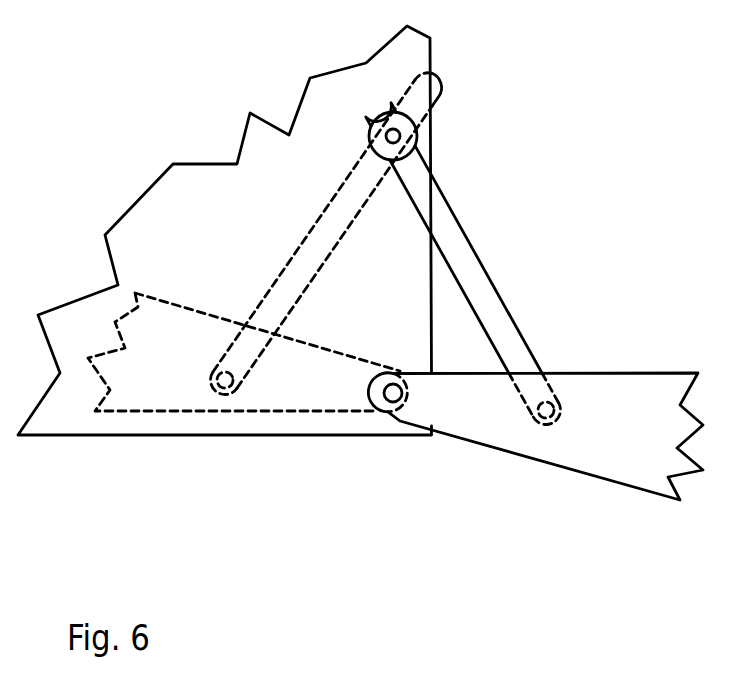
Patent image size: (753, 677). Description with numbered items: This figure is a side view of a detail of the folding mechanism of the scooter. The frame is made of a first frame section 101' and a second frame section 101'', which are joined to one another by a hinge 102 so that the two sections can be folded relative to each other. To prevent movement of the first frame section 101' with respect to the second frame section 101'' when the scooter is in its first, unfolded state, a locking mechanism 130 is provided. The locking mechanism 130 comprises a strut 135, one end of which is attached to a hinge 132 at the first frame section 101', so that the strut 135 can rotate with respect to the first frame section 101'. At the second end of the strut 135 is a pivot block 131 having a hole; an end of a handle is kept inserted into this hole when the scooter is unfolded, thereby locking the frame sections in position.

The first frame section 101' is at (545, 393).
The second frame section 101'' is at (225, 285).
The hinge 102 is at (393, 395).
The locking mechanism 130 is at (393, 307).
The pivot block 131 is at (417, 141).
The hinge 132 is at (540, 412).
The strut 135 is at (452, 258).